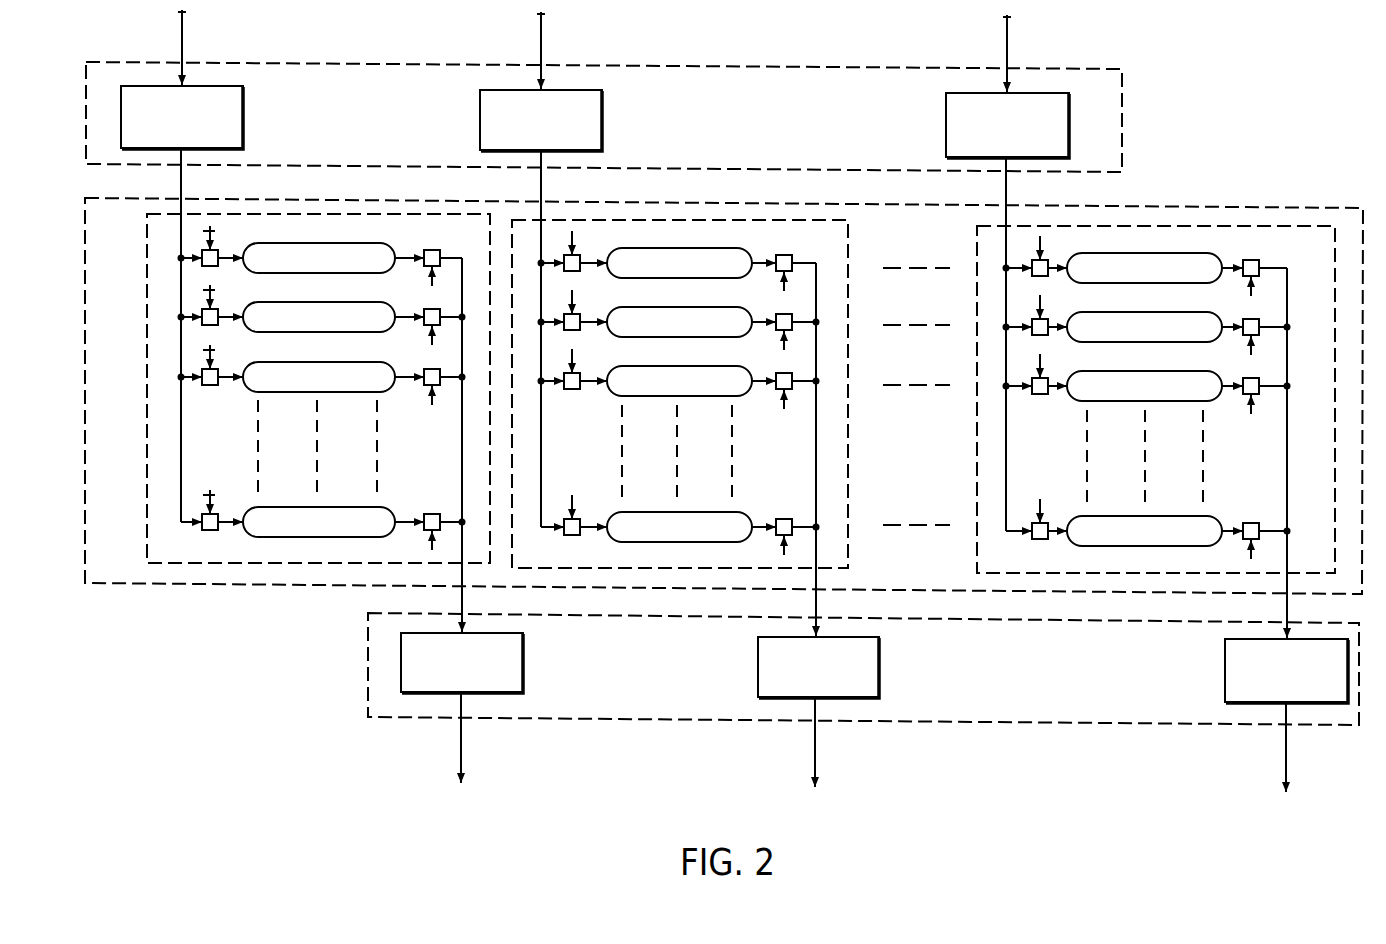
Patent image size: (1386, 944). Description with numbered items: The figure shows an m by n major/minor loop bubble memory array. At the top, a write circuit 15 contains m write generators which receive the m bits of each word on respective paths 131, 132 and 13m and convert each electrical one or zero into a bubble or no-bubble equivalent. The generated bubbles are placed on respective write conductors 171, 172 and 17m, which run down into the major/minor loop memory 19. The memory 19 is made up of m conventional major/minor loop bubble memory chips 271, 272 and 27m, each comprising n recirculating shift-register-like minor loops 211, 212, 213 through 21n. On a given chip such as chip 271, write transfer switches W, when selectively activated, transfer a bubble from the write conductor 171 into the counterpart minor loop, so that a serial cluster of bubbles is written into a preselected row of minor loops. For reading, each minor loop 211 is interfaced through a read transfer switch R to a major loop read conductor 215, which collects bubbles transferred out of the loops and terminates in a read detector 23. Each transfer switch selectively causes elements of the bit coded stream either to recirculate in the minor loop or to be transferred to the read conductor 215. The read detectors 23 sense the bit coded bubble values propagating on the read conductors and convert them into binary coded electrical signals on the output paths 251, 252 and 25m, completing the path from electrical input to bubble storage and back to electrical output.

The write circuit 15 is at (326, 62).
The path 131 is at (183, 20).
The path 132 is at (542, 22).
The path 13m is at (1008, 28).
The write conductor 171 is at (181, 182).
The write conductor 172 is at (541, 184).
The write conductor 17m is at (1006, 188).
The major/minor loop memory 19 is at (1228, 208).
The major/minor loop bubble memory chip 271 is at (147, 280).
The major/minor loop bubble memory chip 272 is at (848, 267).
The major/minor loop bubble memory chip 27m is at (977, 267).
The minor loop 211 is at (283, 244).
The minor loop 212 is at (283, 302).
The minor loop 213 is at (288, 362).
The minor loop 21n is at (290, 507).
The major loop read conductor 215 is at (462, 262).
The read detector 23 is at (368, 664).
The path 251 is at (461, 742).
The path 252 is at (815, 745).
The path 25m is at (1286, 752).